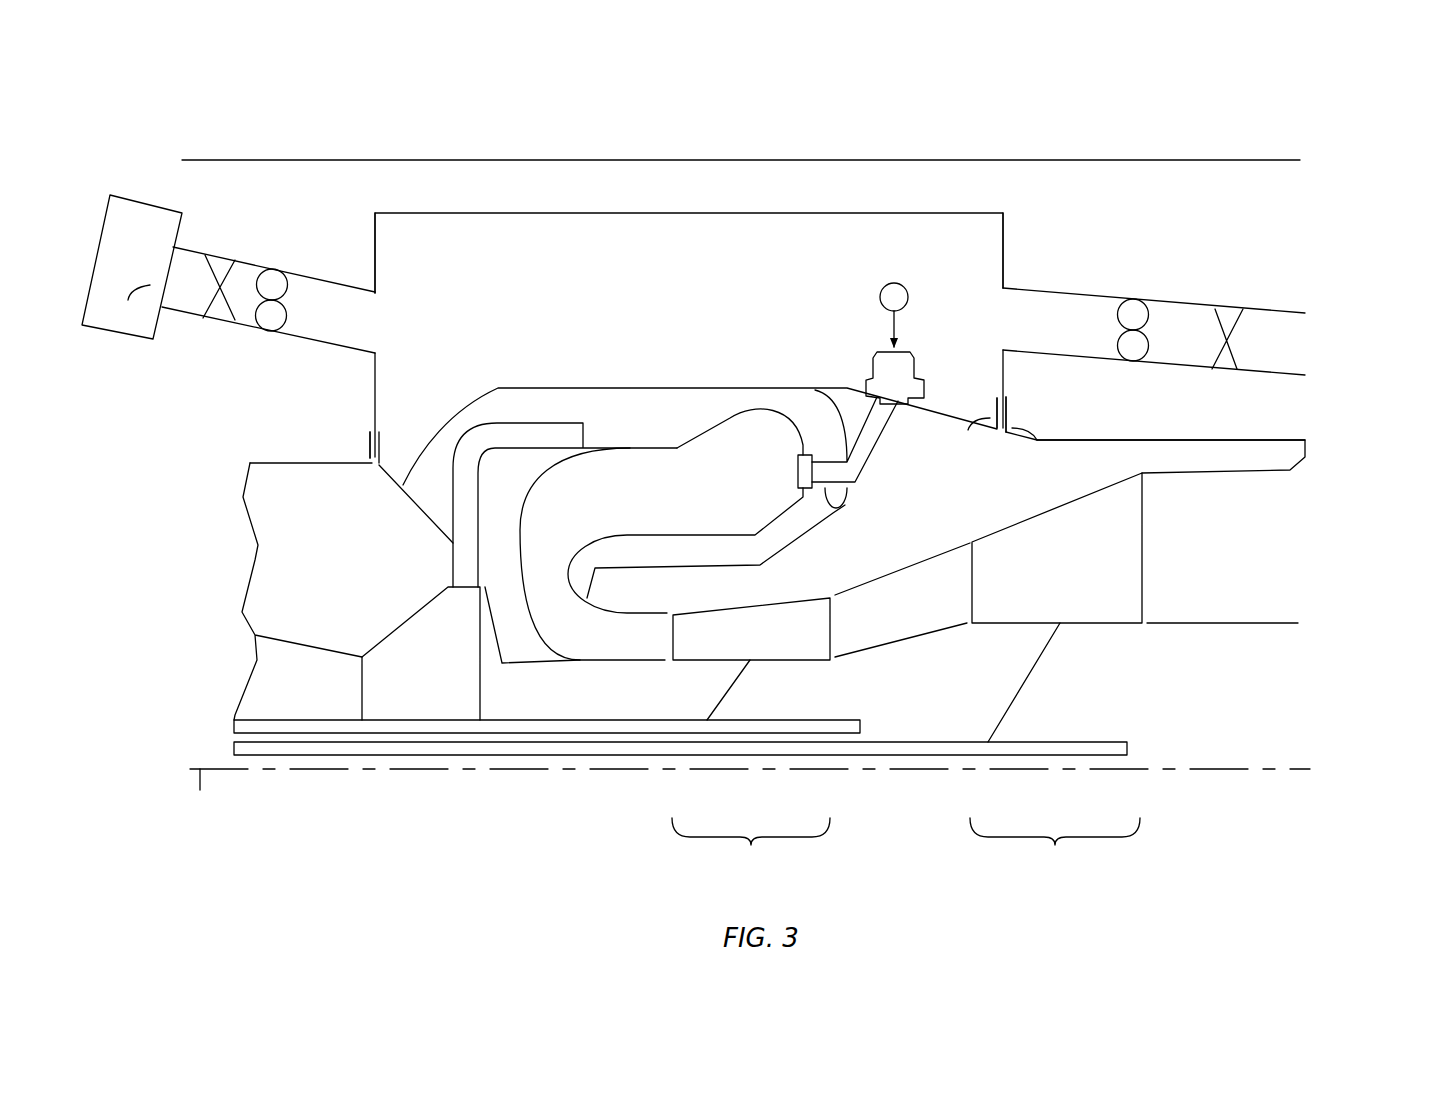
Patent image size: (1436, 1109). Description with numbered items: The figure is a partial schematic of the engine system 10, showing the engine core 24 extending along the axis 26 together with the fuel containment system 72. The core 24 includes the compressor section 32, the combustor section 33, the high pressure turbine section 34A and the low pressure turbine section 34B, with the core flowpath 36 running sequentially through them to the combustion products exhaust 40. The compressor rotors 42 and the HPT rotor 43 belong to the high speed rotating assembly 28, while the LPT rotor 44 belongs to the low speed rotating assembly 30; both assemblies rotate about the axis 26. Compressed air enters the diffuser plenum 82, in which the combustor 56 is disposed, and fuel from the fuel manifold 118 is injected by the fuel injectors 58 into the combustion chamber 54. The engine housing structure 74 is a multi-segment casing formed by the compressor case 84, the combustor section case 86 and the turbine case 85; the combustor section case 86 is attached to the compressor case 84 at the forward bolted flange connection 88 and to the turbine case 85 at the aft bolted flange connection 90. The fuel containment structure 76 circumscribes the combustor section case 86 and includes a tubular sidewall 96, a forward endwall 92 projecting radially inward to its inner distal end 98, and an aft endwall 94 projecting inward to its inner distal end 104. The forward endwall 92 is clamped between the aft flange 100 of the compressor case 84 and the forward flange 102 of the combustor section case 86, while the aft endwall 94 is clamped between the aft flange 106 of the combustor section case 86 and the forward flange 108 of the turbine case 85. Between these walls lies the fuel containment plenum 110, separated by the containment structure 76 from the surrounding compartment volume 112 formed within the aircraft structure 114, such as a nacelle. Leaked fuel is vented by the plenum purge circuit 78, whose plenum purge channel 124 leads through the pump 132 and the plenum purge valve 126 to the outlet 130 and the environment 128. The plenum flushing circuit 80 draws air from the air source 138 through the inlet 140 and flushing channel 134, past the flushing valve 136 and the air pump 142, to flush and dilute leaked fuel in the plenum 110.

The engine system 10 is at (166, 97).
The engine core 24 is at (258, 430).
The axis 26 is at (197, 795).
The high speed rotating assembly 28 is at (872, 723).
The low speed rotating assembly 30 is at (1142, 745).
The compressor section 32 is at (386, 824).
The combustor section 33 is at (752, 372).
The high pressure turbine section 34A is at (751, 851).
The low pressure turbine section 34B is at (1055, 851).
The core flowpath 36 is at (1252, 565).
The combustion products exhaust 40 is at (1302, 515).
The compressor rotor 42 is at (440, 694).
The HPT rotor 43 is at (765, 654).
The LPT rotor 44 is at (1073, 594).
The combustion chamber 54 is at (697, 516).
The combustor 56 is at (661, 436).
The fuel injector 58 is at (840, 508).
The fuel containment system 72 is at (1047, 190).
The engine housing structure 74 is at (1283, 435).
The fuel containment structure 76 is at (738, 205).
The plenum purge circuit 78 is at (1180, 280).
The plenum flushing circuit 80 is at (272, 216).
The diffuser plenum 82 is at (640, 436).
The compressor case 84 is at (300, 463).
The turbine case 85 is at (1123, 440).
The combustor section case 86 is at (552, 387).
The forward bolted flange connection 88 is at (372, 480).
The aft bolted flange connection 90 is at (1000, 447).
The forward endwall 92 is at (375, 250).
The aft endwall 94 is at (1003, 251).
The sidewall 96 is at (620, 213).
The inner distal end 98 is at (385, 440).
The aft flange 100 is at (370, 447).
The forward flange 102 is at (380, 456).
The inner distal end 104 is at (1010, 412).
The aft flange 106 is at (968, 430).
The forward flange 108 is at (1030, 440).
The fuel containment plenum 110 is at (810, 293).
The compartment volume 112 is at (1094, 259).
The aircraft structure 114 is at (494, 150).
The fuel manifold 118 is at (888, 278).
The plenum purge channel 124 is at (1072, 341).
The plenum purge valve 126 is at (1240, 312).
The environment 128 is at (1424, 306).
The outlet 130 is at (1310, 340).
The pump 132 is at (1133, 300).
The flushing channel 134 is at (365, 336).
The flushing valve 136 is at (215, 272).
The air source 138 is at (155, 268).
The inlet 140 is at (122, 315).
The air pump 142 is at (292, 282).